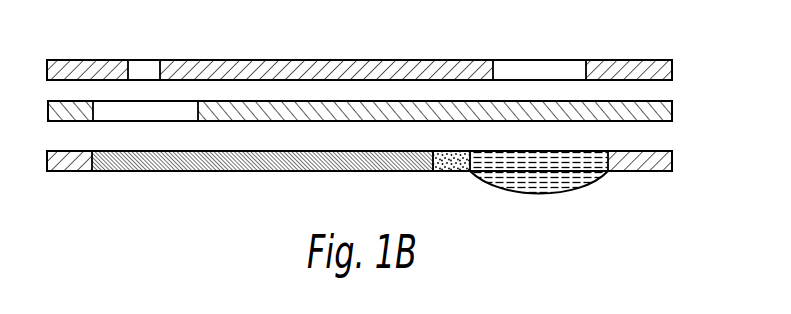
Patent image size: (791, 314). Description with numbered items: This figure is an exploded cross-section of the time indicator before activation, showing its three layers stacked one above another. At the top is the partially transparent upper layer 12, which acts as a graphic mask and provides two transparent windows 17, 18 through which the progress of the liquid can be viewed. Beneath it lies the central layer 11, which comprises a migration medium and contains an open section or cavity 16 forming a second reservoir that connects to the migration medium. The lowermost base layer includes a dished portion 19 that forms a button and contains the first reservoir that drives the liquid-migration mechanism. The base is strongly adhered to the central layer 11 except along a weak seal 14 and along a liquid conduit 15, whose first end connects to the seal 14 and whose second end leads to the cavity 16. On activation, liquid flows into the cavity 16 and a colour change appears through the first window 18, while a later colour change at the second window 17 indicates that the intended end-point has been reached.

The central layer 11 is at (672, 110).
The upper layer 12 is at (670, 72).
The weak seal 14 is at (456, 172).
The liquid conduit 15 is at (233, 171).
The cavity 16 is at (128, 110).
The second window 17 is at (543, 70).
The first window 18 is at (140, 62).
The dished portion 19 is at (574, 173).